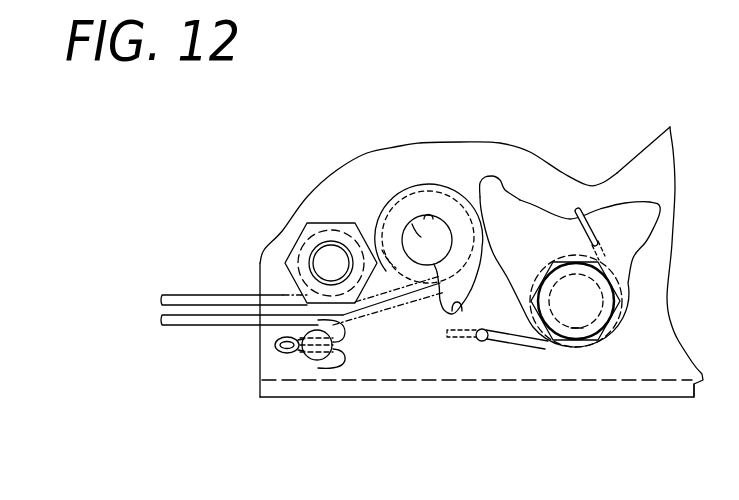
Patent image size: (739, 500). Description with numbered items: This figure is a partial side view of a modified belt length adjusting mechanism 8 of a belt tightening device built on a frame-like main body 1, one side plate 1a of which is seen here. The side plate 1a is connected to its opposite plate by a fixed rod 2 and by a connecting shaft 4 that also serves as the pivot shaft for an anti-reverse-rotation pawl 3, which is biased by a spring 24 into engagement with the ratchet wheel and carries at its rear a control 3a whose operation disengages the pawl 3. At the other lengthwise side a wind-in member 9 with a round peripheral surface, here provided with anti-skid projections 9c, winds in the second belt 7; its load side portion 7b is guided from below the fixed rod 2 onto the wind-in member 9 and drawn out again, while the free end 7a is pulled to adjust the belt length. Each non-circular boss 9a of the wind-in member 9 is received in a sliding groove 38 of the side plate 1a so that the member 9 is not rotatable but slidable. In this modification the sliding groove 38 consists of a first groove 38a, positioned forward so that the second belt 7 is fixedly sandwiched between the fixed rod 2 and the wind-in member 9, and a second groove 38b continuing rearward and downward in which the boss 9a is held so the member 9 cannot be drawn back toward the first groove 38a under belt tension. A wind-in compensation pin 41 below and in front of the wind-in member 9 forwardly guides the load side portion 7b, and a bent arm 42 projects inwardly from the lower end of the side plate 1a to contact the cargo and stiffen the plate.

The main body 1 is at (266, 254).
The side plate 1a is at (310, 198).
The fixed rod 2 is at (303, 245).
The anti-reverse-rotation pawl 3 is at (539, 206).
The control 3a is at (514, 184).
The connecting shaft 4 is at (578, 322).
The second belt 7 is at (203, 329).
The free end 7a is at (182, 292).
The load side portion 7b is at (172, 330).
The belt-length adjusting mechanism 8 is at (359, 216).
The wind-in member 9 is at (387, 197).
The boss 9a is at (415, 227).
The anti-skid projections 9c is at (385, 258).
The spring 24 is at (517, 345).
The sliding groove 38 is at (452, 223).
The first groove 38a is at (438, 217).
The second groove 38b is at (459, 311).
The wind-in compensation pin 41 is at (307, 363).
The bent arm 42 is at (650, 396).